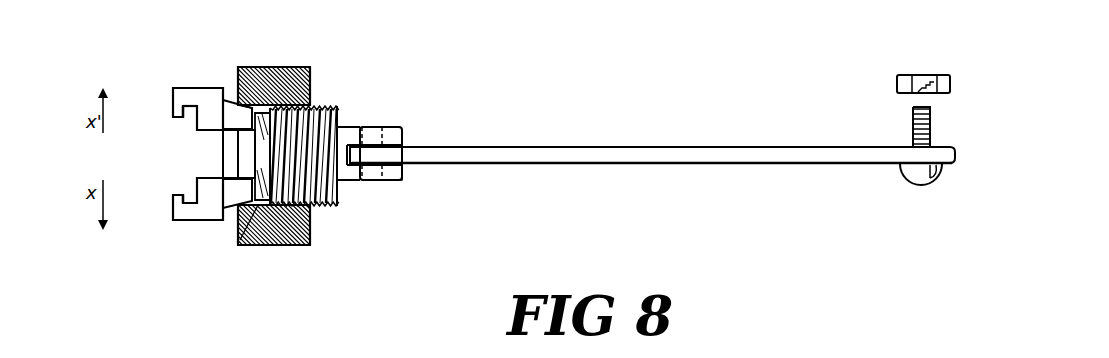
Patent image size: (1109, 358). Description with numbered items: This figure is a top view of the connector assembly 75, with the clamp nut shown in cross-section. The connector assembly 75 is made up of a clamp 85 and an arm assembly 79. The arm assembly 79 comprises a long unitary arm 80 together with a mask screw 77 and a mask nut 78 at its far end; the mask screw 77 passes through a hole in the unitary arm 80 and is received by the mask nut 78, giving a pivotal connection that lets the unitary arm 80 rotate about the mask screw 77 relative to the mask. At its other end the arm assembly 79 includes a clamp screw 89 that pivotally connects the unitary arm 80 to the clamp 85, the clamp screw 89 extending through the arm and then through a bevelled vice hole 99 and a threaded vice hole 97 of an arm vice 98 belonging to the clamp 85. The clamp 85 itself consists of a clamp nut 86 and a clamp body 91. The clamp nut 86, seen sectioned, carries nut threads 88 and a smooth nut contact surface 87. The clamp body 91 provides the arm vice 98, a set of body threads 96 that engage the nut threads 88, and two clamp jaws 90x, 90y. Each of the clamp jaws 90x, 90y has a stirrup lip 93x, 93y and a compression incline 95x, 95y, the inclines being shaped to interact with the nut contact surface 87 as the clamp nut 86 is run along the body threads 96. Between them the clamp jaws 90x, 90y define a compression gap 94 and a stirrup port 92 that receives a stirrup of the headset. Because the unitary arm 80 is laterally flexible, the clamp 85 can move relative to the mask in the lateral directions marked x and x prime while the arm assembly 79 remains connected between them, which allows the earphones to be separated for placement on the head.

The connector assembly 75 is at (133, 101).
The mask screw 77 is at (912, 131).
The mask nut 78 is at (928, 73).
The arm assembly 79 is at (652, 125).
The unitary arm 80 is at (688, 156).
The clamp 85 is at (315, 98).
The clamp nut 86 is at (272, 67).
The nut contact surface 87 is at (242, 167).
The nut threads 88 is at (253, 246).
The clamp screw 89 is at (370, 182).
The clamp jaw 90x is at (186, 96).
The clamp jaw 90y is at (177, 212).
The clamp body 91 is at (212, 87).
The stirrup port 92 is at (188, 193).
The stirrup lip 93x is at (172, 112).
The stirrup lip 93y is at (177, 195).
The compression gap 94 is at (227, 144).
The compression incline 95x is at (228, 100).
The compression incline 95y is at (225, 220).
The body threads 96 is at (325, 204).
The threaded vice hole 97 is at (380, 127).
The arm vice 98 is at (393, 132).
The bevelled vice hole 99 is at (402, 170).